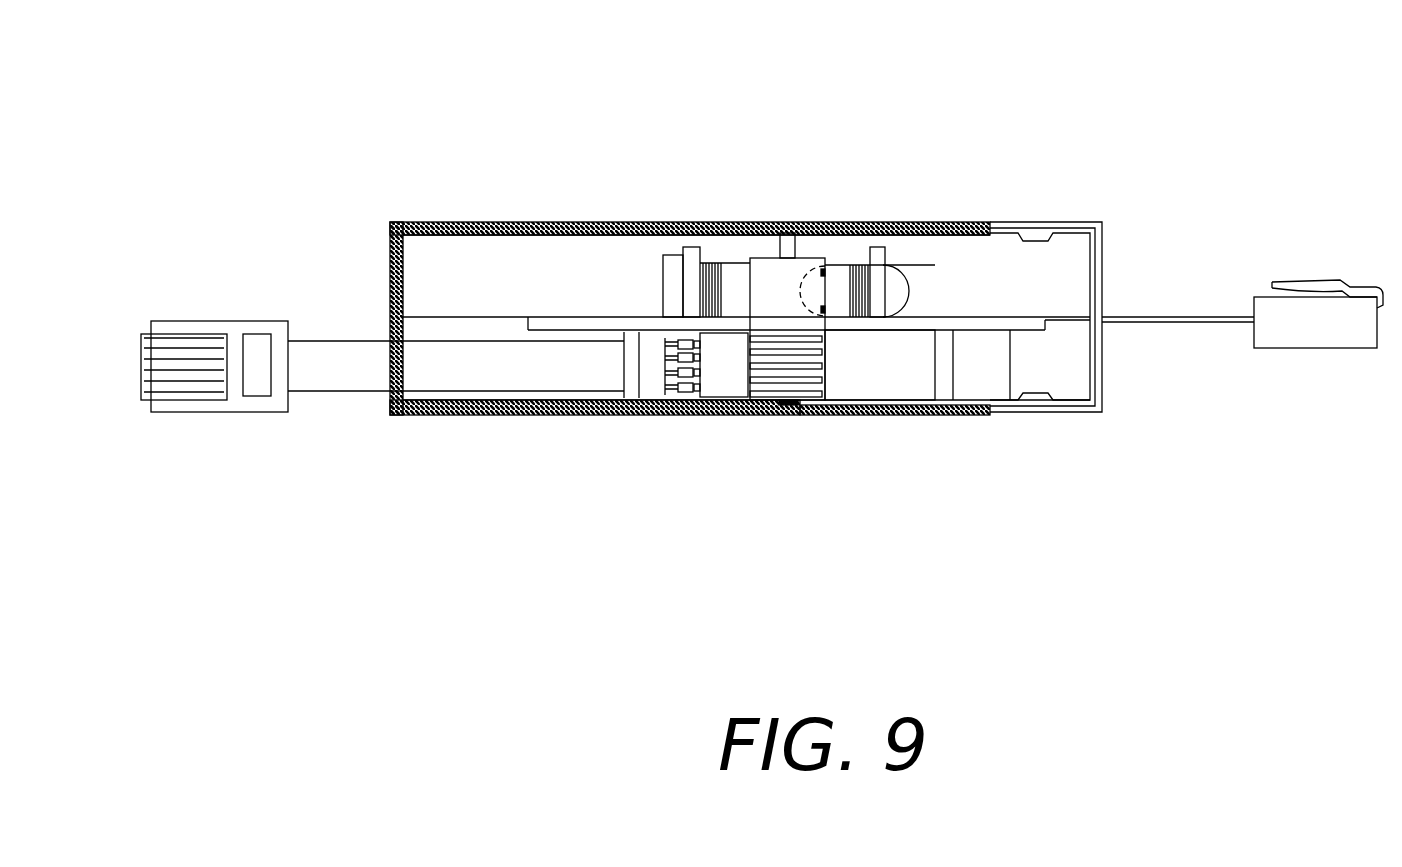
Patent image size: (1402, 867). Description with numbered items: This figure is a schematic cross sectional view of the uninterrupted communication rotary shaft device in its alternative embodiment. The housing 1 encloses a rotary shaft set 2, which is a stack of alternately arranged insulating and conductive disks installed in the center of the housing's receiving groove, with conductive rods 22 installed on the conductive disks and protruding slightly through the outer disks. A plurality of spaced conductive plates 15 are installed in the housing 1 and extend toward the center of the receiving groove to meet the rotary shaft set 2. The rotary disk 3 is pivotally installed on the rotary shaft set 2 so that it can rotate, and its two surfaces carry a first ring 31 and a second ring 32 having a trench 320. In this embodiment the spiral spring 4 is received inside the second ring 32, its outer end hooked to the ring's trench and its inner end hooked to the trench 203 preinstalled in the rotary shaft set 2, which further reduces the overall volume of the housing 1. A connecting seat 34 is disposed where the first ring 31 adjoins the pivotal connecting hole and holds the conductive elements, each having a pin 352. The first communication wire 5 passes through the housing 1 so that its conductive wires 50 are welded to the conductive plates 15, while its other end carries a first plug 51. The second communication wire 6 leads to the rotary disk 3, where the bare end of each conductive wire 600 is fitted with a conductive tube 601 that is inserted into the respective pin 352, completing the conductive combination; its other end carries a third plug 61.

The housing 1 is at (467, 226).
The rotary shaft set 2 is at (818, 363).
The rotary disk 3 is at (597, 321).
The spiral spring 4 is at (692, 256).
The first communication wire 5 is at (1183, 317).
The second communication wire 6 is at (343, 367).
The conductive plates 15 is at (850, 264).
The conductive rods 22 is at (780, 242).
The first ring 31 is at (942, 375).
The second ring 32 is at (877, 255).
The connecting seat 34 is at (725, 382).
The conductive wires 50 is at (1002, 228).
The first plug 51 is at (1327, 330).
The third plug 61 is at (190, 334).
The trench 203 is at (822, 258).
The trench 320 is at (900, 238).
The pin 352 is at (697, 390).
The conductive wires 600 is at (668, 379).
The conductive tube 601 is at (681, 398).